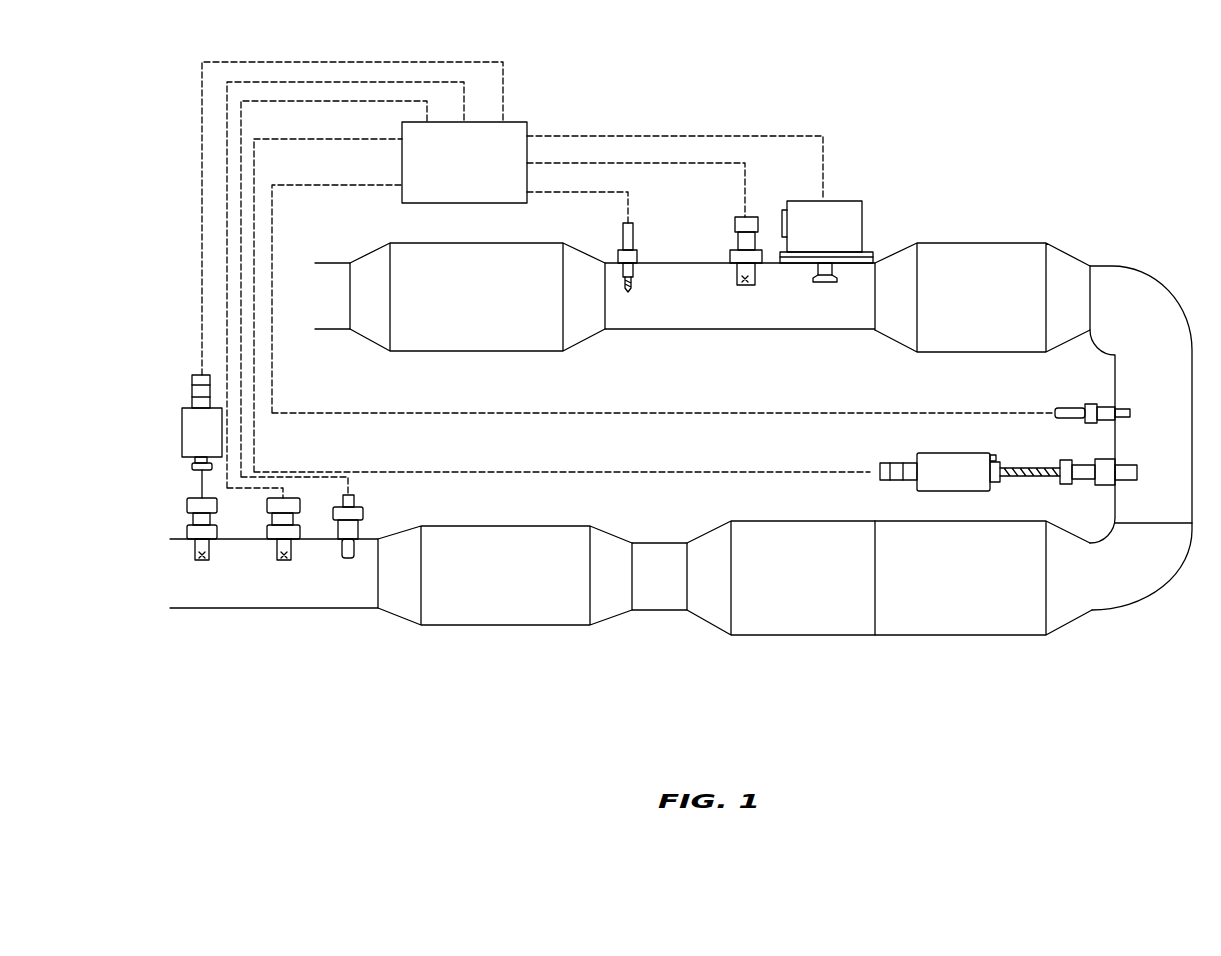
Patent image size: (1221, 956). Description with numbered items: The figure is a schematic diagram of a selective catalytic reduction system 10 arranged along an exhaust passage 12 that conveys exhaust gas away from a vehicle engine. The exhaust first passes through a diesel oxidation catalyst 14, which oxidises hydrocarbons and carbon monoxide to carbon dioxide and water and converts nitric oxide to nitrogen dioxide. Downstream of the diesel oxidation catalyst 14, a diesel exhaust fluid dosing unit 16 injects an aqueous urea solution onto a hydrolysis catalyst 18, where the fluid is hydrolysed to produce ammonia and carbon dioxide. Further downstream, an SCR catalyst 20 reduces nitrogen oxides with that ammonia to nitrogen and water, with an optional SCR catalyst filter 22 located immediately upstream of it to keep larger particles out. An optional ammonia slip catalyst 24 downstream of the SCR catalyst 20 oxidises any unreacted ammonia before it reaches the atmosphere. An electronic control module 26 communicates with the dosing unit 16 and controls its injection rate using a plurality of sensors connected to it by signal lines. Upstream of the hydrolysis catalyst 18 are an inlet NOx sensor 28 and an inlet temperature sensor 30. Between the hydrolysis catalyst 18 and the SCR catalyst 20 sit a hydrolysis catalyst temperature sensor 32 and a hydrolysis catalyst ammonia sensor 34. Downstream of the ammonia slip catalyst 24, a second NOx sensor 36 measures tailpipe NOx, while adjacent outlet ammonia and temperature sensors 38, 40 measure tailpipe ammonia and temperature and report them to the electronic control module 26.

The selective catalytic reduction (SCR) system 10 is at (1078, 190).
The exhaust passage 12 is at (1117, 262).
The diesel oxidation catalyst (DOC) 14 is at (515, 243).
The diesel exhaust fluid (DEF) dosing unit 16 is at (843, 200).
The hydrolysis catalyst 18 is at (983, 241).
The SCR catalyst 20 is at (802, 637).
The SCR catalyst filter 22 is at (955, 637).
The ammonia slip (AS) catalyst 24 is at (505, 627).
The electronic control module (ECM) 26 is at (464, 162).
The inlet nitrogen oxide (NOx) sensor 28 is at (742, 216).
The inlet temperature sensor 30 is at (637, 243).
The hydrolysis catalyst temperature sensor 32 is at (1122, 409).
The hydrolysis catalyst ammonia sensor 34 is at (1122, 462).
The second NOx sensor 36 is at (267, 535).
The outlet ammonia sensor 38 is at (187, 536).
The outlet temperature sensor 40 is at (363, 520).